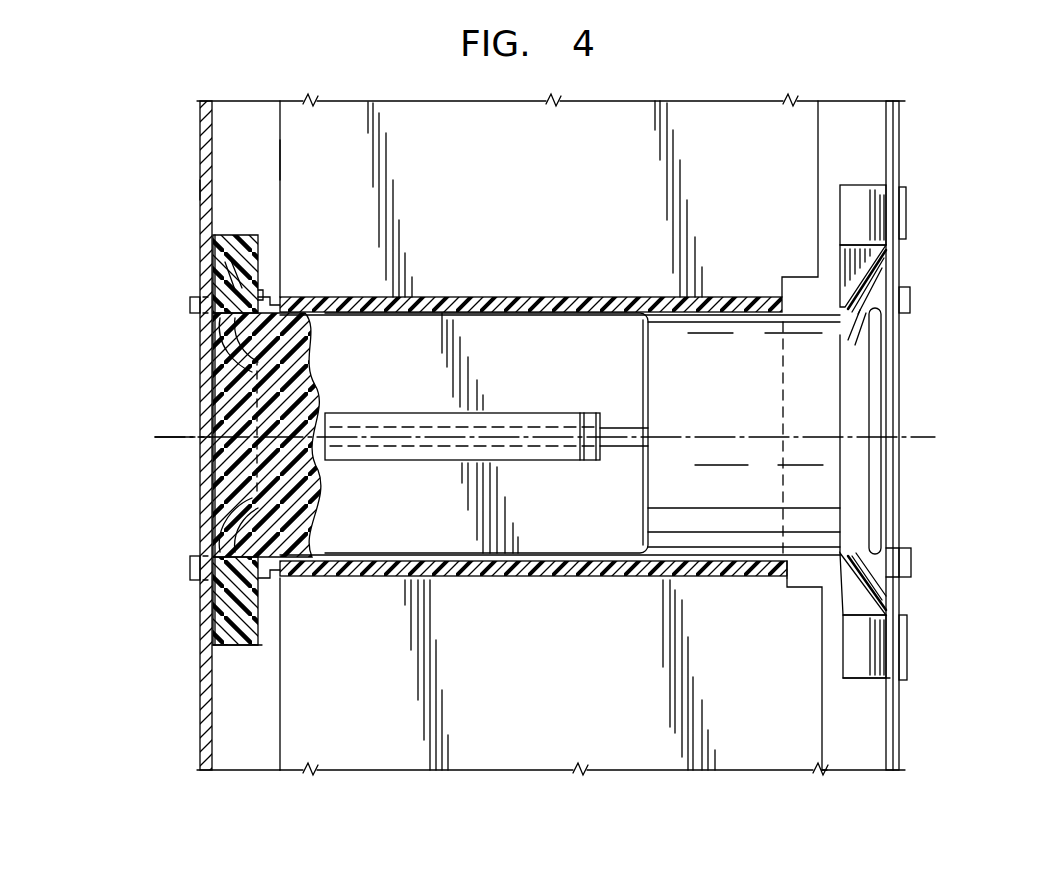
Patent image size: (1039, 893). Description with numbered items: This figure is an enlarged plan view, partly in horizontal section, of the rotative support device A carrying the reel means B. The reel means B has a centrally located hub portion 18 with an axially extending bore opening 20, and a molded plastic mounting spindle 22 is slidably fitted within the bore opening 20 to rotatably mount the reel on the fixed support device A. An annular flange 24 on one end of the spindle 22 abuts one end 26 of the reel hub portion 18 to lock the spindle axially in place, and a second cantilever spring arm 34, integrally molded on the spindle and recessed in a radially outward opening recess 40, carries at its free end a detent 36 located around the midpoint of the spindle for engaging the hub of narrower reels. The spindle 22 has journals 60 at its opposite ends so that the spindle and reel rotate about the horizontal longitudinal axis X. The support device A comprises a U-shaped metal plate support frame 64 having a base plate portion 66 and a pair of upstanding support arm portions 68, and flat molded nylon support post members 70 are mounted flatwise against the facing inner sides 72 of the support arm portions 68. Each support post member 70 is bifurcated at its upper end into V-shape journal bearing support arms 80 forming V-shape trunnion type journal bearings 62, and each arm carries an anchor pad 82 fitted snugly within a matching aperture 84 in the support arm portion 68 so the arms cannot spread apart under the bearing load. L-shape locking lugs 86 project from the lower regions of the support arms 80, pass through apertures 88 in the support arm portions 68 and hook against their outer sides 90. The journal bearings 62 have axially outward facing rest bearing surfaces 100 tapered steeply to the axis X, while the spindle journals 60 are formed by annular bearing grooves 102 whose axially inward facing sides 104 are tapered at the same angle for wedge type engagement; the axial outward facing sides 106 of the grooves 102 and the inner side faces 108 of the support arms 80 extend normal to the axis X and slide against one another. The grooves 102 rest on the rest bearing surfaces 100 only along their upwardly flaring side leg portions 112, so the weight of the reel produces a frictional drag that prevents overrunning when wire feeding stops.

The hub portion 18 is at (453, 297).
The bore opening 20 is at (542, 318).
The mounting spindle 22 is at (668, 552).
The annular flange 24 is at (280, 583).
The end of reel hub portion 26 is at (283, 296).
The second cantilever spring arm 34 is at (416, 410).
The detent 36 is at (592, 460).
The recess 40 is at (500, 540).
The journals 60 is at (228, 538).
The V-shape trunnion type journal bearings 62 is at (222, 276).
The support frame 64 is at (196, 752).
The base plate portion 66 is at (255, 757).
The support arm portions 68 is at (206, 690).
The support post members 70 is at (262, 626).
The inner sides 72 is at (222, 755).
The V-shape journal bearing support arms 80 is at (245, 252).
The anchor pad 82 is at (878, 188).
The aperture 84 is at (906, 222).
The L-shape locking lugs 86 is at (192, 316).
The apertures 88 is at (190, 590).
The outer sides 90 is at (204, 485).
The rest bearing surfaces 100 is at (190, 305).
The annular bearing grooves 102 is at (256, 516).
The axially inward facing sides 104 is at (282, 541).
The axial outward facing sides 106 is at (228, 366).
The inner side faces 108 is at (265, 300).
The upwardly flaring side leg portions 112 is at (893, 287).
The rotative support device A is at (196, 186).
The reel means B is at (275, 138).
The longitudinal axis X is at (165, 437).